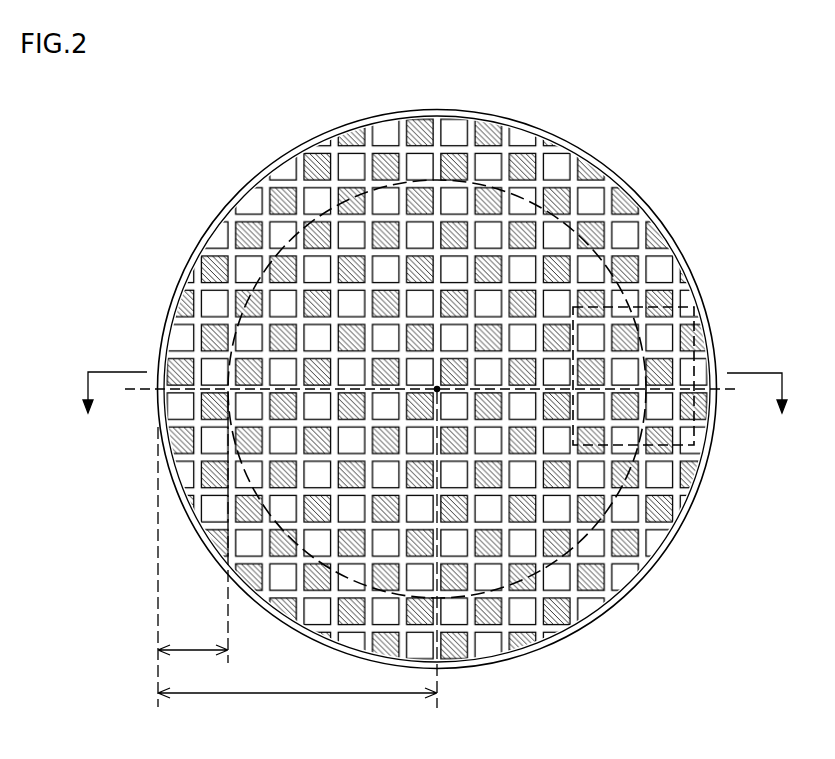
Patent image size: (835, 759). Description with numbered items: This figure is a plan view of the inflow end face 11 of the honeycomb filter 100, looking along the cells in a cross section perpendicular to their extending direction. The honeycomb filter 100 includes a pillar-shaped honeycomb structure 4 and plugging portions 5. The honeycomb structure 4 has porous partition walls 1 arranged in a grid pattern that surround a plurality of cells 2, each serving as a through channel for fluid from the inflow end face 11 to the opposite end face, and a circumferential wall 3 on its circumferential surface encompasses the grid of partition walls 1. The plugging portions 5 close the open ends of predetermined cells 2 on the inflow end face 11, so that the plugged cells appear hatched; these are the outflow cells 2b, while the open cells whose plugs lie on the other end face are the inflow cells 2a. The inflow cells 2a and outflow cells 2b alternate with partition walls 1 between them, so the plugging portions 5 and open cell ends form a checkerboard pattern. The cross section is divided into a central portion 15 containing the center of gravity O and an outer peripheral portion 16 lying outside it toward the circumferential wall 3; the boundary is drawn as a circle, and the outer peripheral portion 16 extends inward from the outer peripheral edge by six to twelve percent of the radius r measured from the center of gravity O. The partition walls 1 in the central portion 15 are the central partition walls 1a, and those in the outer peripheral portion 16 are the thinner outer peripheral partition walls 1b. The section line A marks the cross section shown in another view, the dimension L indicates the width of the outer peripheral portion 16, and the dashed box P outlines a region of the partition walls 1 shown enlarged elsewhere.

The honeycomb filter 100 is at (765, 38).
The inflow end face 11 is at (233, 175).
The honeycomb structure 4 is at (709, 309).
The plugging portion 5 is at (458, 177).
The partition wall 1 is at (599, 156).
The central partition wall 1a is at (507, 237).
The outer peripheral partition wall 1b is at (574, 203).
The cell 2 is at (678, 216).
The inflow cell 2a is at (594, 267).
The outflow cell 2b is at (622, 277).
The circumferential wall 3 is at (648, 563).
The central portion 15 is at (472, 523).
The outer peripheral portion 16 is at (573, 587).
The center of gravity O is at (437, 389).
The region P is at (694, 428).
The section line A-A' A is at (434, 410).
The distance L is at (193, 553).
The radius r is at (297, 559).